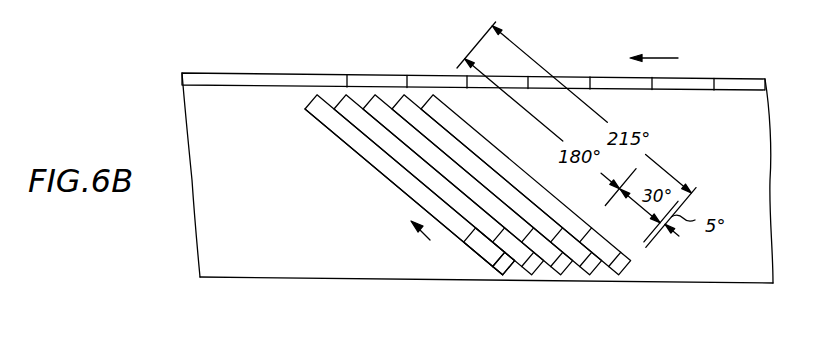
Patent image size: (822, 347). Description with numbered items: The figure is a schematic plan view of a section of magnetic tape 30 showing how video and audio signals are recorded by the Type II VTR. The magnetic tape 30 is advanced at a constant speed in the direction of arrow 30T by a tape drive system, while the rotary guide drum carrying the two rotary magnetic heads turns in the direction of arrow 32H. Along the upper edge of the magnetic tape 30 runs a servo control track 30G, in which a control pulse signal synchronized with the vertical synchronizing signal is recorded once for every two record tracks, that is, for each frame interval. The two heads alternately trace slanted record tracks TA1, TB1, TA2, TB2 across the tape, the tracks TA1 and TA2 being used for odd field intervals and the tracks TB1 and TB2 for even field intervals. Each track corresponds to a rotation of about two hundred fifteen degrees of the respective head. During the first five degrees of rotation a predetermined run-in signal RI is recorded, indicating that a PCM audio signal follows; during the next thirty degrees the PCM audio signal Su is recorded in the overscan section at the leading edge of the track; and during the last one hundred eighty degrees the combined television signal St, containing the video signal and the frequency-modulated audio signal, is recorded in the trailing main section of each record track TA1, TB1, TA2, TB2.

The magnetic tape 30 is at (352, 280).
The servo control track 30G is at (287, 78).
The direction of tape advance 30T is at (667, 45).
The direction of rotary guide drum rotation 32H is at (408, 238).
The combined television signal St is at (383, 174).
The PCM audio signal Su is at (482, 250).
The run-in signal RI is at (496, 280).
The record track TA1 is at (506, 270).
The record track TB1 is at (536, 270).
The record track TA2 is at (564, 270).
The record track TB2 is at (594, 270).